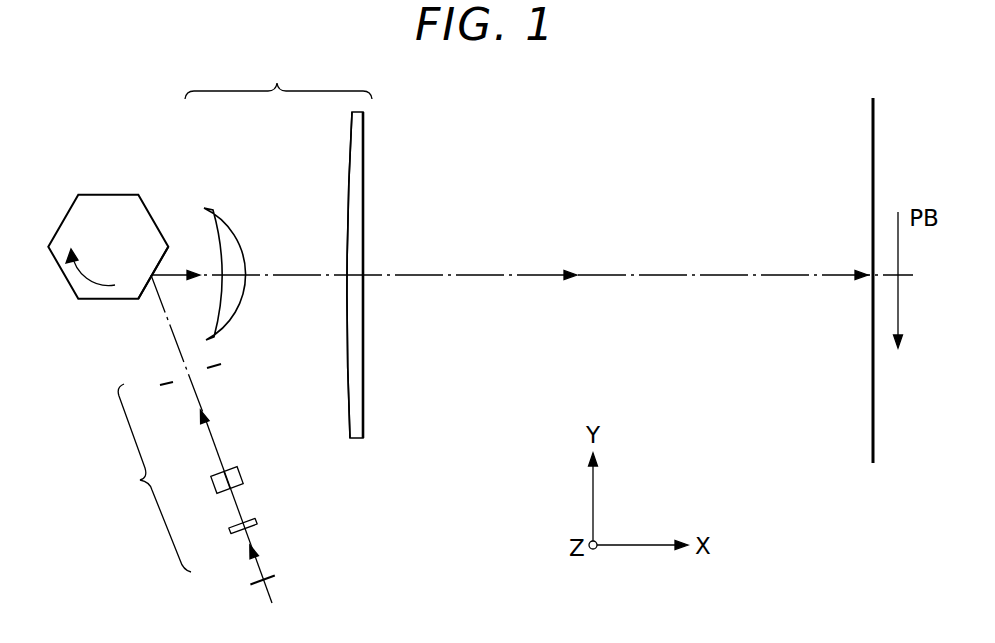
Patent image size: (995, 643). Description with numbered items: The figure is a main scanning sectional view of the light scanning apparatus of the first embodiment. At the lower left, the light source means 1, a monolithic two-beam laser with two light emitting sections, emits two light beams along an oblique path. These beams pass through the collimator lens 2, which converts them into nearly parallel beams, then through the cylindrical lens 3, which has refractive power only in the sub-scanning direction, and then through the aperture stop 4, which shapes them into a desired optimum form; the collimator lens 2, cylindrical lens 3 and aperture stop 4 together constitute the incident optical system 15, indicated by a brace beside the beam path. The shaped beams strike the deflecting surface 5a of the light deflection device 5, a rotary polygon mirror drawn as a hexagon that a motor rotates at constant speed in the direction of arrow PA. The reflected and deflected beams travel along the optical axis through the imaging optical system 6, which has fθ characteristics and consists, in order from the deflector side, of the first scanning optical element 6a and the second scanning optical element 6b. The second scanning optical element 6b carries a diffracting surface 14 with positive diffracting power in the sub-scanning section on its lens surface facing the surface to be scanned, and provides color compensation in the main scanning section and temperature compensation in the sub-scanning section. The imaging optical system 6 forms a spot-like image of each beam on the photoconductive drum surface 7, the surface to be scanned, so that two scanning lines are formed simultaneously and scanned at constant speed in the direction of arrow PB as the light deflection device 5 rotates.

The light source means 1 is at (272, 577).
The collimator lens 2 is at (233, 530).
The cylindrical lens 3 is at (239, 468).
The aperture stop 4 is at (163, 385).
The light deflection device 5 is at (116, 202).
The deflecting surface 5a is at (150, 290).
The imaging optical system 6 is at (278, 78).
The first scanning optical element 6a is at (204, 210).
The second scanning optical element 6b is at (357, 175).
The photoconductive drum surface 7 is at (871, 336).
The diffracting surface 14 is at (363, 395).
The incident optical system 15 is at (149, 478).